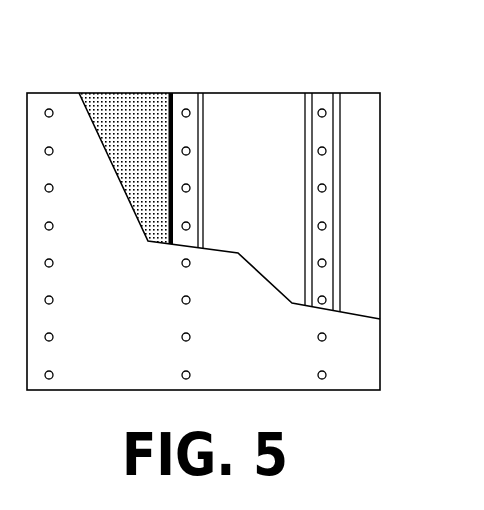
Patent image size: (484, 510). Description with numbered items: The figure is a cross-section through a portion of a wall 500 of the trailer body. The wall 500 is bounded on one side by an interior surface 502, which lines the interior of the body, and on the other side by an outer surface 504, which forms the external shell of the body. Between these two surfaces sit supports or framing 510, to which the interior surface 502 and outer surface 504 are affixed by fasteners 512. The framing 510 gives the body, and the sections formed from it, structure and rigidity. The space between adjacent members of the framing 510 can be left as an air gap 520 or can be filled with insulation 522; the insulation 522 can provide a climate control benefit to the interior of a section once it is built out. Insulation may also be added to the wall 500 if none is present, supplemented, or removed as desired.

The wall 500 is at (392, 81).
The interior surface 502 is at (377, 352).
The outer surface 504 is at (377, 199).
The framing 510 is at (322, 92).
The fasteners 512 is at (186, 108).
The air gap 520 is at (254, 115).
The insulation 522 is at (117, 108).